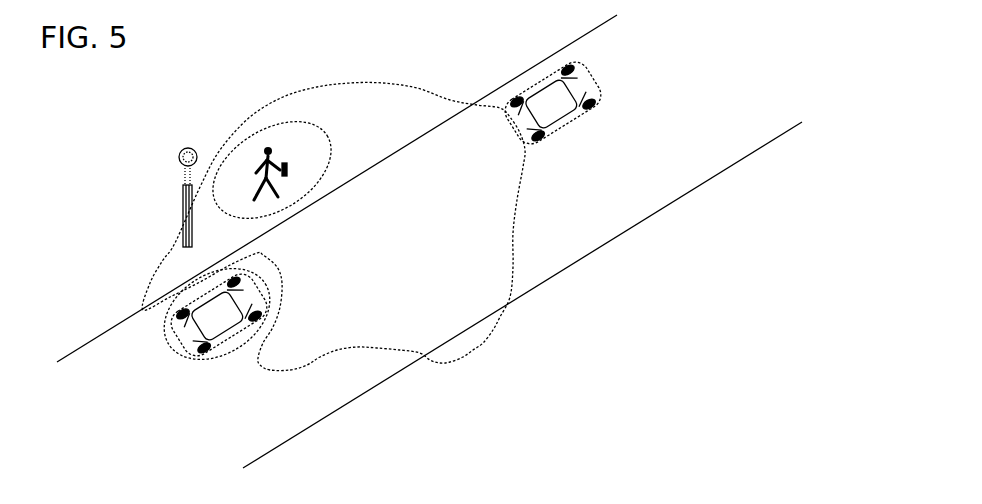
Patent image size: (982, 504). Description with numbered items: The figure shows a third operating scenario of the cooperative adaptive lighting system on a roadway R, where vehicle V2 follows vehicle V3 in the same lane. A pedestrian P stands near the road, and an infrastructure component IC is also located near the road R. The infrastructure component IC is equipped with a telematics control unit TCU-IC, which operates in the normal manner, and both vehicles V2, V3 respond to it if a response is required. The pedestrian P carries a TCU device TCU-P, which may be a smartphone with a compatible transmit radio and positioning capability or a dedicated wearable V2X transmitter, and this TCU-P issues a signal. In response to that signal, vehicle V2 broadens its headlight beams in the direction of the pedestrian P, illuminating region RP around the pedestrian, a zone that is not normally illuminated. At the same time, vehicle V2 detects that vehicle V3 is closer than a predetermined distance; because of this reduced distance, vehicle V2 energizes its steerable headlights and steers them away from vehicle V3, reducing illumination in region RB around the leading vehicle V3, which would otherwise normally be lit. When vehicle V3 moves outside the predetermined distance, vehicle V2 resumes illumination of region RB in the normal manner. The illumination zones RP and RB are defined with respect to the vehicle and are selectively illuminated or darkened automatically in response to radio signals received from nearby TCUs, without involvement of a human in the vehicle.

The roadway R is at (660, 173).
The region RB is at (286, 272).
The region RP is at (323, 114).
The pedestrian P is at (280, 137).
The pedestrian TCU device TCU-P is at (299, 161).
The infrastructure component IC is at (167, 221).
The infrastructure telematics control unit TCU-IC is at (166, 136).
The vehicle V2 is at (558, 103).
The vehicle V3 is at (207, 322).